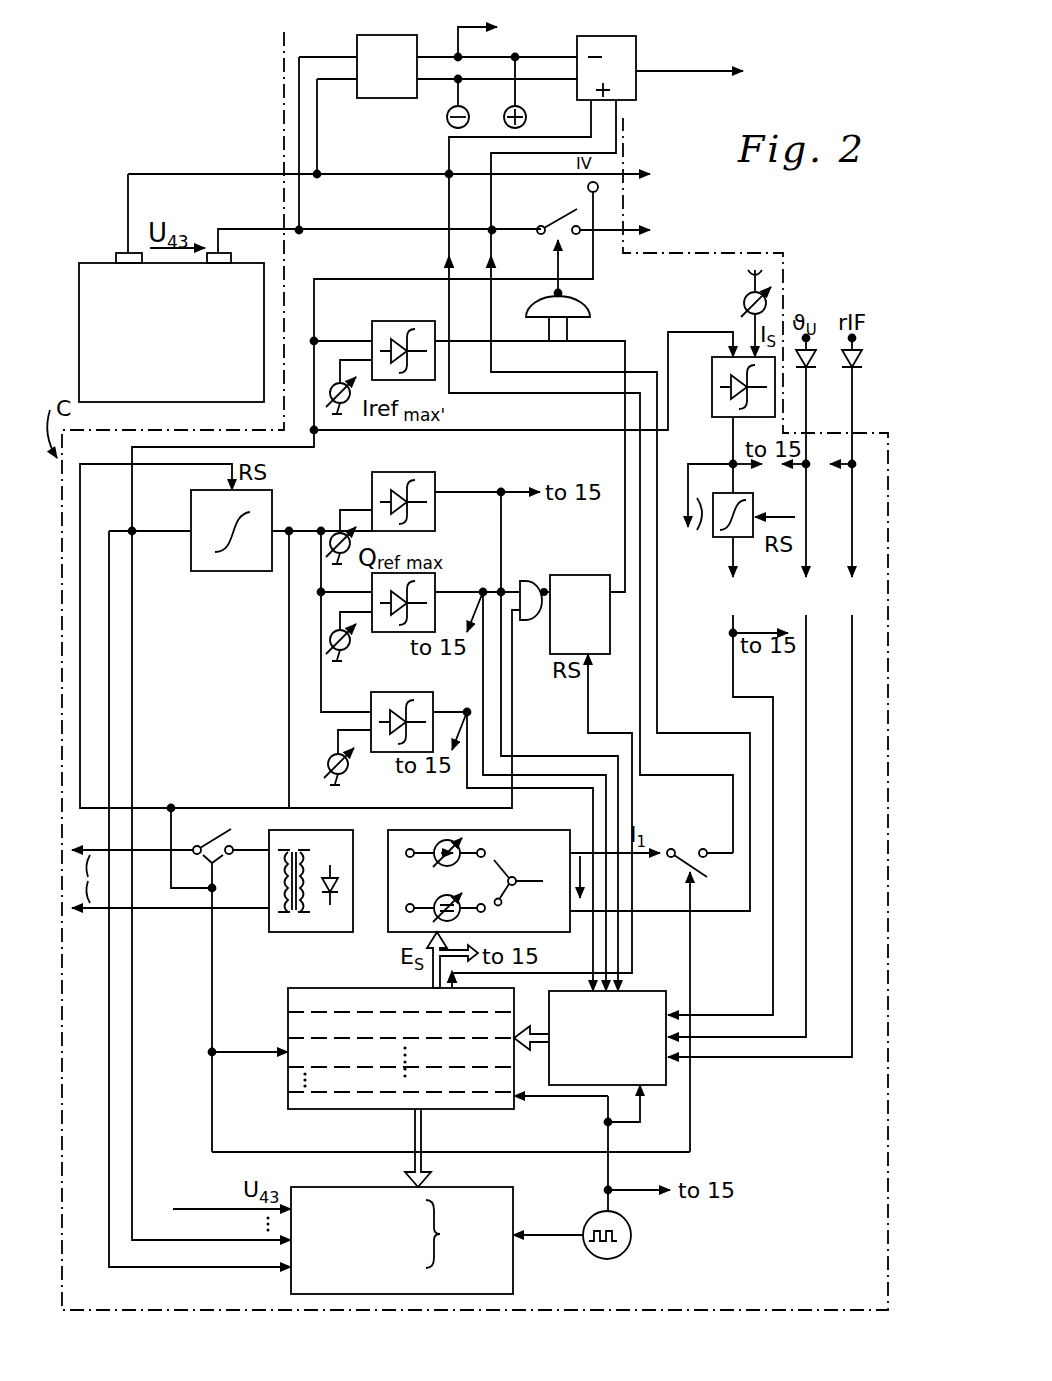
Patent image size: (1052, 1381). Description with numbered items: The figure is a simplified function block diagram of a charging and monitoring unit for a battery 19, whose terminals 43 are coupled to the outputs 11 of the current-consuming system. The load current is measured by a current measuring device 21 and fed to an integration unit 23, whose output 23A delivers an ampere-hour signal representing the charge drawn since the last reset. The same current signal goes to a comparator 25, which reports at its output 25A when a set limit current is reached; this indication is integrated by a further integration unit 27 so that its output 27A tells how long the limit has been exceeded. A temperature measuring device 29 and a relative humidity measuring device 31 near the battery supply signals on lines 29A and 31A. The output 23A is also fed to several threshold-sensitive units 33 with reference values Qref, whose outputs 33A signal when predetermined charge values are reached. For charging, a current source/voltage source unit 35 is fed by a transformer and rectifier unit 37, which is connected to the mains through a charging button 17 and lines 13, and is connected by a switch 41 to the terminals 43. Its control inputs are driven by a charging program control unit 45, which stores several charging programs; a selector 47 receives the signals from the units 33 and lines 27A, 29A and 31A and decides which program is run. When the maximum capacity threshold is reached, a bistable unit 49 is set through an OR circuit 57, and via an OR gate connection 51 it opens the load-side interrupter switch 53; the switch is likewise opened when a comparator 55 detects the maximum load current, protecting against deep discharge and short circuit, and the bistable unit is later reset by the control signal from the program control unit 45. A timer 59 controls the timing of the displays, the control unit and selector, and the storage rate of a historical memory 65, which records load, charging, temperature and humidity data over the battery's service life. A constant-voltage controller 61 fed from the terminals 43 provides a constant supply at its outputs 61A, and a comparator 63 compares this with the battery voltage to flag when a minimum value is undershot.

The outputs 11 is at (634, 203).
The lines 13 is at (170, 879).
The charging button 17 is at (222, 823).
The battery 19 is at (98, 268).
The current measuring device 21 is at (599, 190).
The integration unit 23 is at (196, 571).
The output 23A is at (290, 524).
The comparator 25 is at (712, 406).
The output 25A is at (714, 495).
The integration unit 27 is at (742, 537).
The output 27A is at (728, 776).
The temperature measuring device 29 is at (811, 401).
The line 29A is at (748, 750).
The measuring device for relative humidity 31 is at (859, 401).
The line 31A is at (771, 760).
The threshold-sensitive units 33 is at (433, 475).
The outputs 33A is at (476, 718).
The charging current source/charging voltage source 35 is at (390, 933).
The transformer and rectifier unit 37 is at (284, 932).
The switch 41 is at (708, 847).
The terminals 43 is at (173, 234).
The charging program control unit 45 is at (345, 1111).
The selector 47 is at (656, 1086).
The bistable unit 49 is at (596, 575).
The OR gate connection 51 is at (572, 310).
The interrupter switch 53 is at (551, 215).
The comparator 55 is at (402, 321).
The OR circuit 57 is at (528, 580).
The timer 59 is at (622, 1251).
The constant-voltage controller 61 is at (372, 96).
The outputs 61A is at (484, 42).
The comparator 63 is at (628, 93).
The historical memory 65 is at (513, 1283).